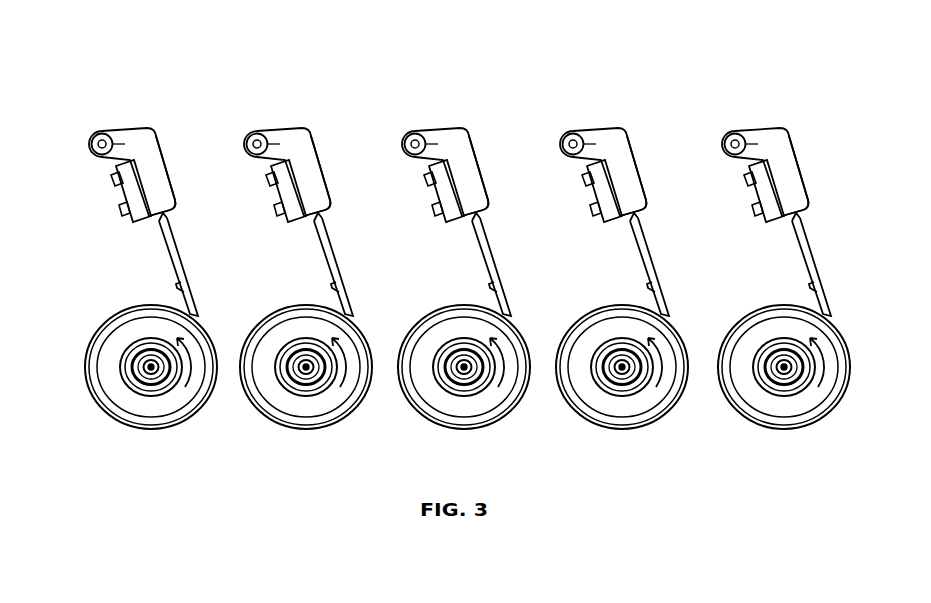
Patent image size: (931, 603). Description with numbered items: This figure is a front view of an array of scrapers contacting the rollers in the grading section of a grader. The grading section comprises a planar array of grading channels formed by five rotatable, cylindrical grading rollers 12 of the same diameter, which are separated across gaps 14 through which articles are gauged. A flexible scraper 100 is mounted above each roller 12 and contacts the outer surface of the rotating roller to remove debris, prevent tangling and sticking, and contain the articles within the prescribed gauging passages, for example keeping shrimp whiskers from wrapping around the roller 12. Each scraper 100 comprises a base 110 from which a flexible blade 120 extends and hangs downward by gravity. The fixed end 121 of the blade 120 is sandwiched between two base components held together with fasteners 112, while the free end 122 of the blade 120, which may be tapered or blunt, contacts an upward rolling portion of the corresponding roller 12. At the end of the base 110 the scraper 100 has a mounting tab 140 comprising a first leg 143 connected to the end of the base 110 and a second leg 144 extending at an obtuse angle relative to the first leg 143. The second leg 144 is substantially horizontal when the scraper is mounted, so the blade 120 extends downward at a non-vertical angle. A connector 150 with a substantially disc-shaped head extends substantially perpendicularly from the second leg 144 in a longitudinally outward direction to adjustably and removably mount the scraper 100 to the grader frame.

The grading roller 12 is at (278, 418).
The gap 14 is at (227, 377).
The flexible scraper 100 is at (449, 178).
The base 110 is at (133, 224).
The fasteners 112 is at (117, 180).
The flexible blade 120 is at (178, 252).
The fixed end 121 is at (173, 216).
The free end 122 is at (207, 300).
The mounting tab 140 is at (145, 152).
The first leg 143 is at (157, 178).
The second leg 144 is at (113, 141).
The connector 150 is at (93, 139).